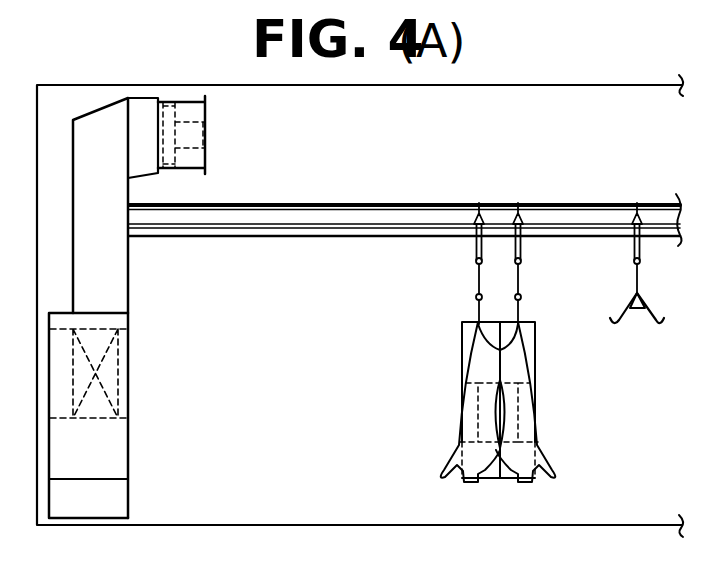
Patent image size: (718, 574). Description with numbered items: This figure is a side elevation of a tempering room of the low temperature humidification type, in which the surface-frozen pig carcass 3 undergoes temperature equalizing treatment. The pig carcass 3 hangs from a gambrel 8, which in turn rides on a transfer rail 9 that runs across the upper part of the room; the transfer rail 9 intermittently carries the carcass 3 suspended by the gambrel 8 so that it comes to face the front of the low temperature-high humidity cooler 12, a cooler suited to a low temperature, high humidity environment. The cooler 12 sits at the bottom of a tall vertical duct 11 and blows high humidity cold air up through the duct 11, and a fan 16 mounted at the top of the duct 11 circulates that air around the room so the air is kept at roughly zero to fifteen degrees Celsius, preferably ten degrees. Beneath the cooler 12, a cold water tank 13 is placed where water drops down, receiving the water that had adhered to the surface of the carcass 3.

The pig carcass 3 is at (537, 408).
The gambrel 8 is at (635, 301).
The transfer rail 9 is at (435, 238).
The duct 11 is at (115, 268).
The low temperature-high humidity cooler 12 is at (92, 375).
The cold water tank 13 is at (108, 498).
The fan 16 is at (207, 143).